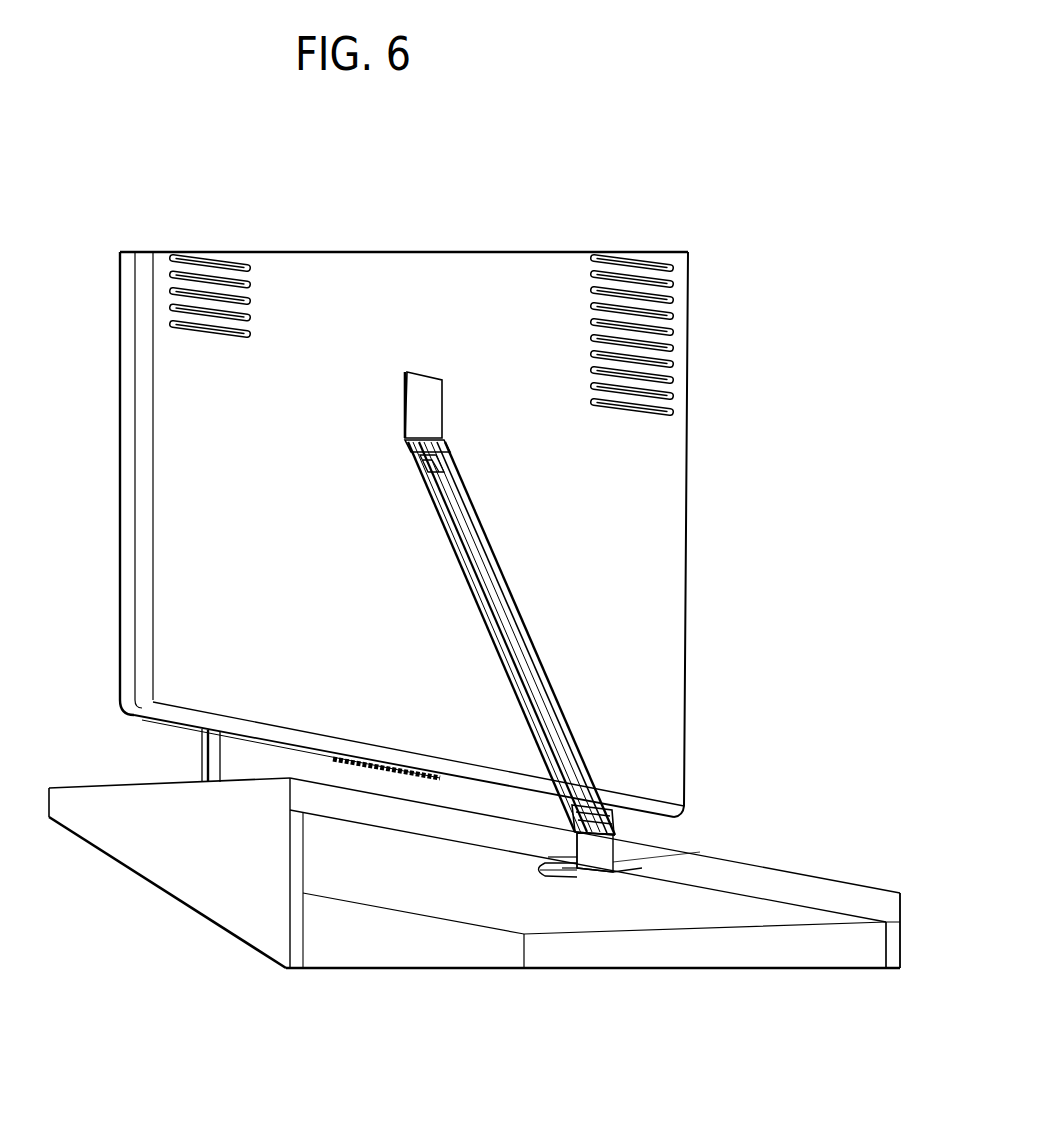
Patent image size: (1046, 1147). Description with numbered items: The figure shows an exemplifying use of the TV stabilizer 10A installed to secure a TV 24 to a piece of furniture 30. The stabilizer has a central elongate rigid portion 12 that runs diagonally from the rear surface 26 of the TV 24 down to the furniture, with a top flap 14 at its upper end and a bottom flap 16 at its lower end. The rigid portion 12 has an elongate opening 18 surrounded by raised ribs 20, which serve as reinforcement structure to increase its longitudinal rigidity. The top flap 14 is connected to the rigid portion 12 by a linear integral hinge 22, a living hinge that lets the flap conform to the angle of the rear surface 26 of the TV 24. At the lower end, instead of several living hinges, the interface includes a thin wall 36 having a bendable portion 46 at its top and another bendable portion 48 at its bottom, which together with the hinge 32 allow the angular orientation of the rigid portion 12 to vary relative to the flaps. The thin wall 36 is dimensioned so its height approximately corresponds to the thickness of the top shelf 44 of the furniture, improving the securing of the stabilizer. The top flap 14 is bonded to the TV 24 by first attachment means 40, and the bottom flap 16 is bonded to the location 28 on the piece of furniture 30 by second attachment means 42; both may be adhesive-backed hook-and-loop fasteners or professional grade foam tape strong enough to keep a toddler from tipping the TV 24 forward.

The TV stabilizer 10A is at (547, 610).
The rigid portion 12 is at (462, 581).
The top flap 14 is at (438, 428).
The bottom flap 16 is at (570, 870).
The elongate opening 18 is at (483, 575).
The raised ribs 20 is at (552, 687).
The integral hinge 22 is at (405, 438).
The TV 24 is at (122, 397).
The rear surface 26 is at (229, 527).
The location 28 is at (545, 862).
The piece of furniture 30 is at (231, 888).
The integral hinge 32 is at (640, 866).
The thin wall 36 is at (600, 860).
The first attachment means 40 is at (405, 385).
The second attachment means 42 is at (553, 856).
The top shelf 44 is at (813, 897).
The bendable portion 46 is at (613, 836).
The bendable portion 48 is at (613, 872).